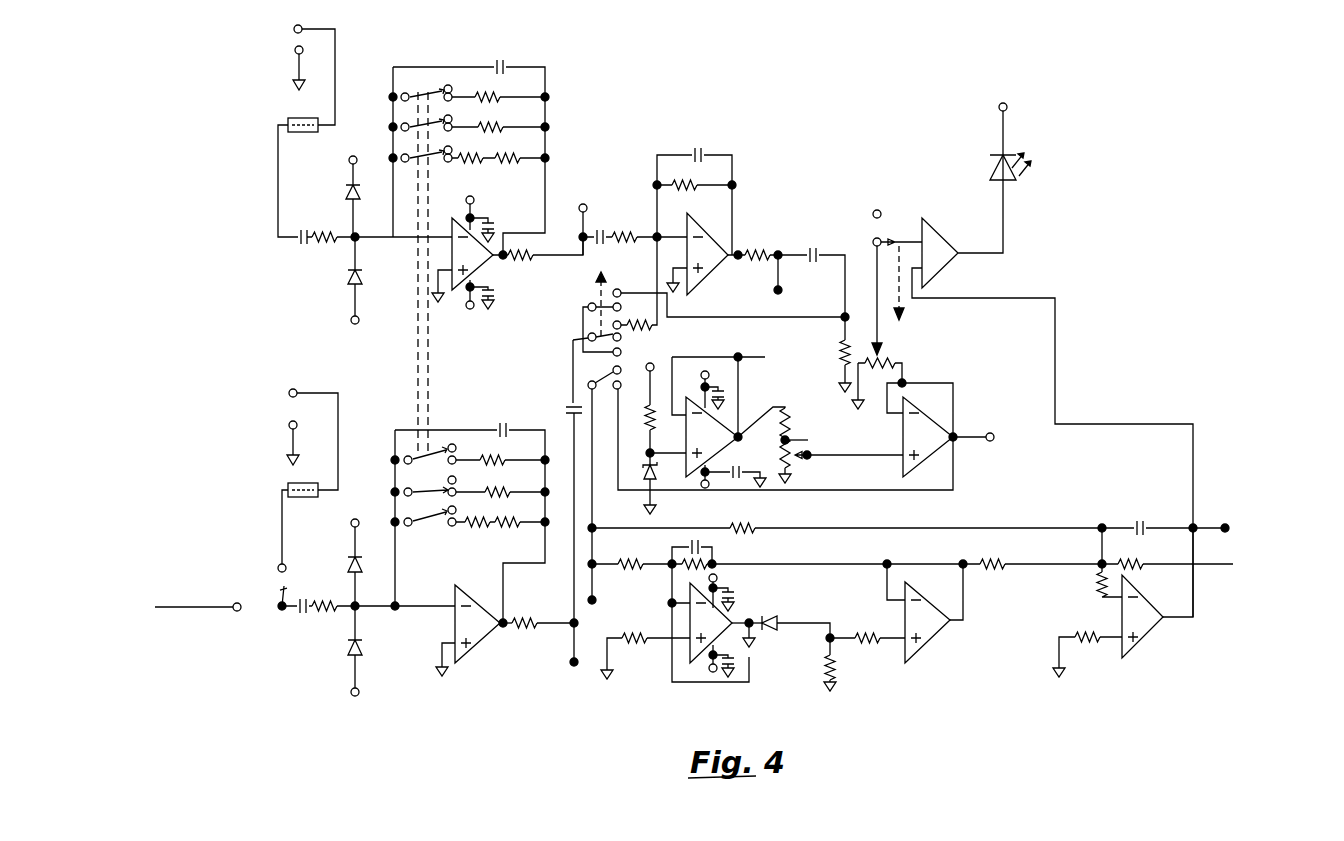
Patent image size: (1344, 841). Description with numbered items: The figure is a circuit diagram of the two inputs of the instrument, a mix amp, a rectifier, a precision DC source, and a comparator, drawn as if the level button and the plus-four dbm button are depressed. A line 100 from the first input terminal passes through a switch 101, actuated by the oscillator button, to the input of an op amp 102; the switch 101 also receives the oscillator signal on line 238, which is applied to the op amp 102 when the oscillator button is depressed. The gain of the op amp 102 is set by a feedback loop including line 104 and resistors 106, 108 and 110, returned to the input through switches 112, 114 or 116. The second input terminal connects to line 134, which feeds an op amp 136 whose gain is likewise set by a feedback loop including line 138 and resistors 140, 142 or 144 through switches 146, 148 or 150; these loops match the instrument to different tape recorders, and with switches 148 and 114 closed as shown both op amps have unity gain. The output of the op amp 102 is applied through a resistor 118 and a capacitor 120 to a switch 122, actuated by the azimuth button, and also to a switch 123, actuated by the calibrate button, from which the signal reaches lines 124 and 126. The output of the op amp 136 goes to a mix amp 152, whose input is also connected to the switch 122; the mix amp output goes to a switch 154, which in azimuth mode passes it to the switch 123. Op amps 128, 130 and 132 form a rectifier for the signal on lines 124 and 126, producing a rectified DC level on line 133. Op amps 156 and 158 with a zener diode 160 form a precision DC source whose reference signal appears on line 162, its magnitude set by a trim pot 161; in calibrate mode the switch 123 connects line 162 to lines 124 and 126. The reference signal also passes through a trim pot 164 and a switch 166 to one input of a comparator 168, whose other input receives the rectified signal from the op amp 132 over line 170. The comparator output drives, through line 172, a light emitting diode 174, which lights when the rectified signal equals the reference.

The line 100 is at (286, 612).
The switch 101 is at (288, 591).
The op amp 102 is at (470, 653).
The line 104 is at (453, 511).
The resistor 106 is at (502, 449).
The resistor 108 is at (502, 483).
The resistor 110 is at (502, 524).
The switch 112 is at (432, 450).
The switch 114 is at (430, 491).
The switch 116 is at (428, 524).
The resistor 118 is at (543, 642).
The capacitor 120 is at (568, 405).
The switch 122 is at (573, 343).
The switch 123 is at (590, 382).
The line 124 is at (607, 527).
The line 126 is at (607, 562).
The op amp 128 is at (736, 621).
The op amp 130 is at (940, 636).
The op amp 132 is at (1148, 633).
The line 133 is at (1213, 567).
The line 134 is at (300, 242).
The op amp 136 is at (485, 265).
The line 138 is at (475, 244).
The resistor 140 is at (505, 99).
The resistor 142 is at (505, 129).
The resistor 144 is at (507, 160).
The switch 146 is at (415, 85).
The switch 148 is at (418, 118).
The switch 150 is at (418, 146).
The mix amp 152 is at (712, 272).
The switch 154 is at (600, 305).
The op amp 156 is at (720, 450).
The op amp 158 is at (945, 447).
The zener diode 160 is at (656, 480).
The trim pot 161 is at (810, 440).
The line 162 is at (923, 492).
The trim pot 164 is at (890, 360).
The switch 166 is at (905, 240).
The comparator 168 is at (950, 234).
The line 170 is at (1003, 298).
The line 172 is at (1005, 202).
The light emitting diode 174 is at (1018, 176).
The line 238 is at (194, 606).